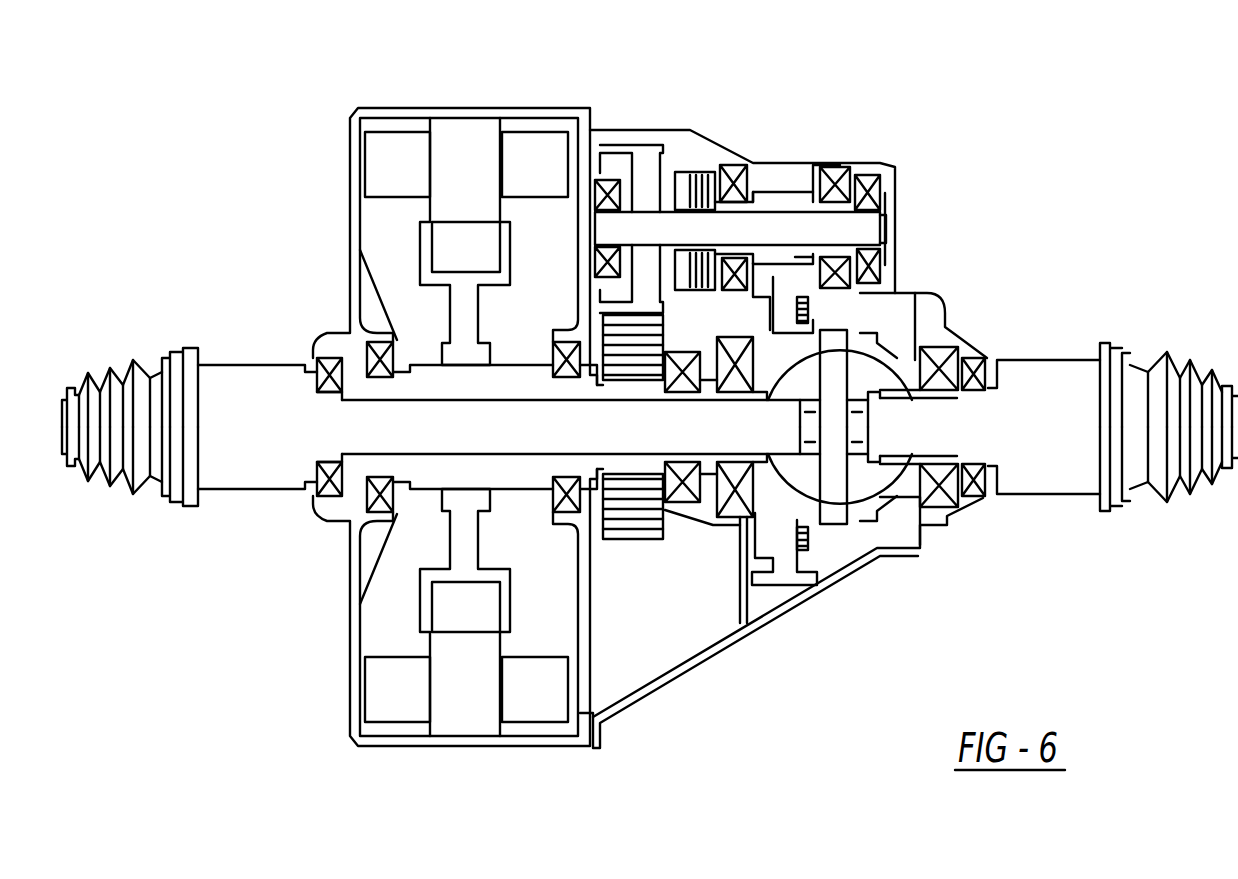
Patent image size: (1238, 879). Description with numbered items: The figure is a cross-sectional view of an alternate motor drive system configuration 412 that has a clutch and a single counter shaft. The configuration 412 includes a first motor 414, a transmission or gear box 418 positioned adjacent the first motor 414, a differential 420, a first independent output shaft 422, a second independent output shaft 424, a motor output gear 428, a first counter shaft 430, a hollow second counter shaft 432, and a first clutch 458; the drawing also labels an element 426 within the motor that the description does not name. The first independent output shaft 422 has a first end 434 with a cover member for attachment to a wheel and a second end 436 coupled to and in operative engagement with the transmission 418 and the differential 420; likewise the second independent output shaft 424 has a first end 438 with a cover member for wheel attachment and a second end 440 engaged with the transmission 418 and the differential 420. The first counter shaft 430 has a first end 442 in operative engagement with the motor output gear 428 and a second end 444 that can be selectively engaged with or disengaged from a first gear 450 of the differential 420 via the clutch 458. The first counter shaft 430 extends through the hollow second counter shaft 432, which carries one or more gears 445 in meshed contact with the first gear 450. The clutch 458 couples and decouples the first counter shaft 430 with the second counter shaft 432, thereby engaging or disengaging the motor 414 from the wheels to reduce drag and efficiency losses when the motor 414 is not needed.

The motor drive system configuration 412 is at (152, 197).
The first motor 414 is at (380, 108).
The transmission or gear box 418 is at (700, 130).
The differential 420 is at (857, 333).
The first independent output shaft 422 is at (468, 425).
The second independent output shaft 424 is at (930, 423).
The rotor 426 is at (427, 365).
The motor output gear 428 is at (637, 530).
The first counter shaft 430 is at (770, 227).
The hollow second counter shaft 432 is at (812, 165).
The first end 434 is at (250, 400).
The second end 436 is at (775, 432).
The first end 438 is at (1052, 440).
The second end 440 is at (903, 430).
The first end 442 is at (628, 232).
The second end 444 is at (798, 257).
The gears 445 is at (797, 197).
The first gear 450 is at (860, 305).
The first clutch 458 is at (700, 178).